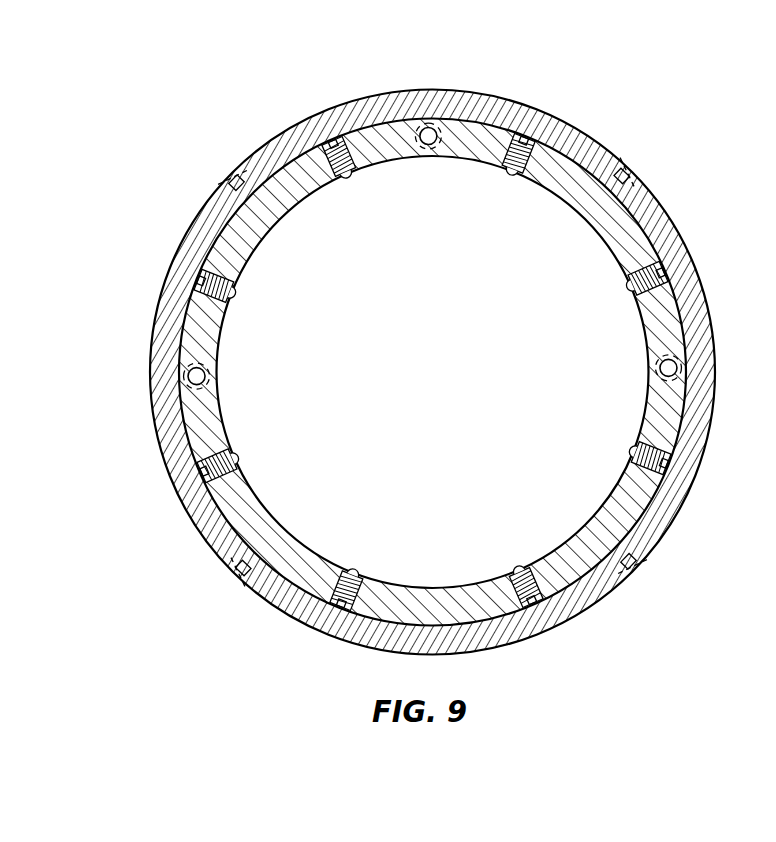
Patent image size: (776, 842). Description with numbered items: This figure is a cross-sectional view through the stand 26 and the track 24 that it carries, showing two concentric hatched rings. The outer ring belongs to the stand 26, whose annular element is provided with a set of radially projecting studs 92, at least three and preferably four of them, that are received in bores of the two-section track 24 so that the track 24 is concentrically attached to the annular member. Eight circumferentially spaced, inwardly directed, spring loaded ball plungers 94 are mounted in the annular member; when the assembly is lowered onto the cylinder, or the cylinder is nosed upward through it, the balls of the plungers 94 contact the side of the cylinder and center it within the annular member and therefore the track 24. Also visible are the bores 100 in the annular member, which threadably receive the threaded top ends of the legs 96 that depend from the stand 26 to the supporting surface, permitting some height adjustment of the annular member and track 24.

The track 24 is at (328, 637).
The stand 26 is at (584, 122).
The radially projecting studs 92 is at (242, 163).
The spring loaded ball plungers 94 is at (345, 178).
The legs 96 is at (431, 128).
The bores 100 is at (432, 153).